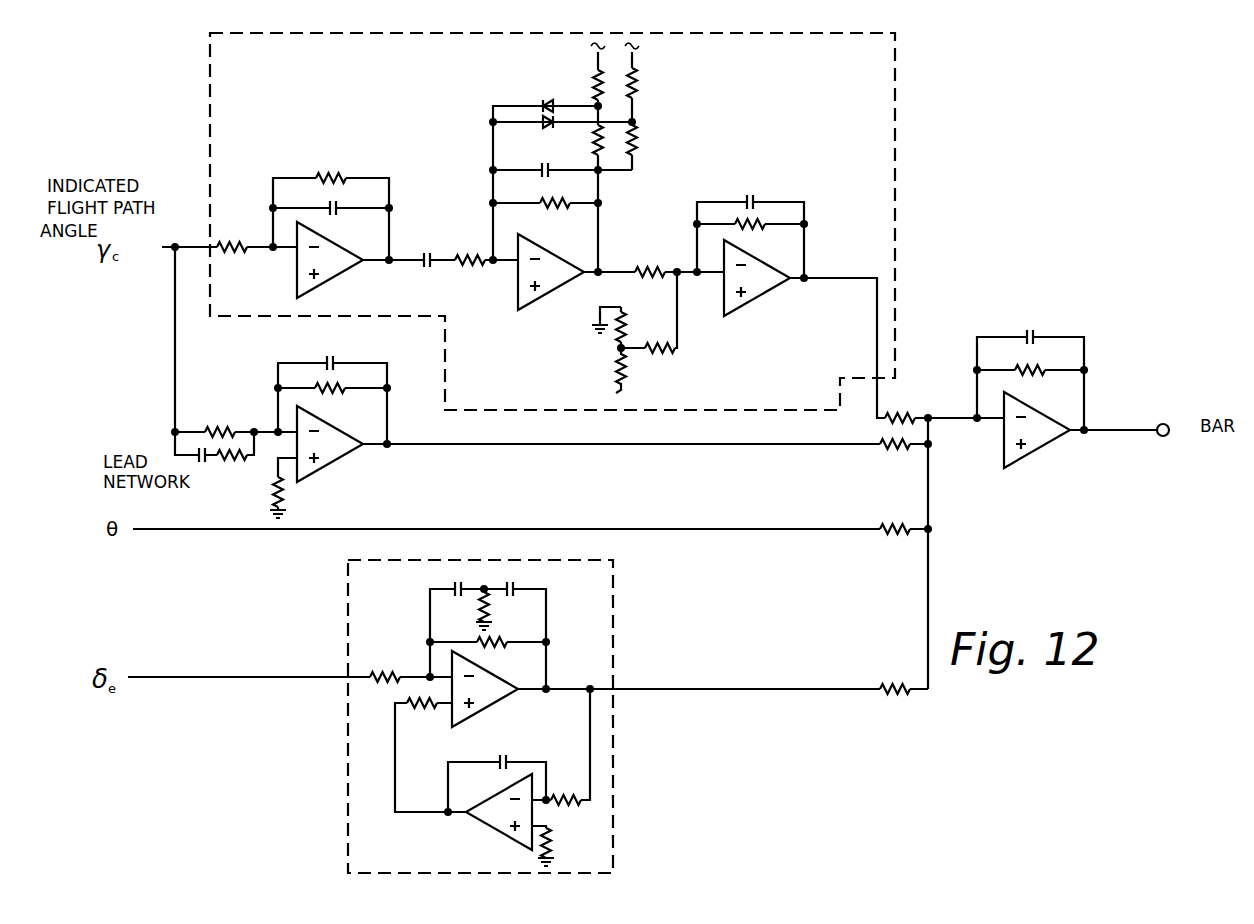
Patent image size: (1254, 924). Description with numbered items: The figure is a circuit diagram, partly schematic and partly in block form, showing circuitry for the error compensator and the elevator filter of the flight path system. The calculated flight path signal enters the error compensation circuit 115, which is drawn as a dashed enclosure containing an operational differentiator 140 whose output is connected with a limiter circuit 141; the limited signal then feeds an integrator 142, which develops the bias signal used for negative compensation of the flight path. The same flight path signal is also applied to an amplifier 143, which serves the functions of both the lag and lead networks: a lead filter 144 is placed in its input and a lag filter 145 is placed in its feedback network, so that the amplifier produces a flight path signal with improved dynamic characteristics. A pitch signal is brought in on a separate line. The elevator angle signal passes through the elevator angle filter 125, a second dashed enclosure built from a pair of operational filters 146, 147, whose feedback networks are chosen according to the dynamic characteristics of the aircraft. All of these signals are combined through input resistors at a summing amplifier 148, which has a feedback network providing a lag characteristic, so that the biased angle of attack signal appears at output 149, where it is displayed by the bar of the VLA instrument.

The error compensation circuit 115 is at (895, 122).
The elevator angle filter 125 is at (613, 612).
The operational differentiator 140 is at (338, 155).
The limiter circuit 141 is at (642, 217).
The integrator 142 is at (814, 189).
The amplifier 143 is at (387, 477).
The lead filter 144 is at (188, 434).
The lag filter 145 is at (357, 372).
The operational filter 146 is at (585, 638).
The operational filter 147 is at (593, 841).
The summing amplifier 148 is at (968, 397).
The output 149 is at (1168, 426).